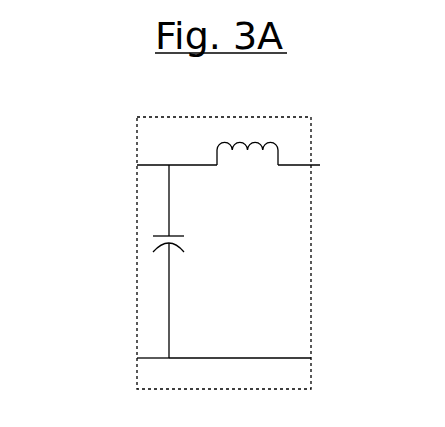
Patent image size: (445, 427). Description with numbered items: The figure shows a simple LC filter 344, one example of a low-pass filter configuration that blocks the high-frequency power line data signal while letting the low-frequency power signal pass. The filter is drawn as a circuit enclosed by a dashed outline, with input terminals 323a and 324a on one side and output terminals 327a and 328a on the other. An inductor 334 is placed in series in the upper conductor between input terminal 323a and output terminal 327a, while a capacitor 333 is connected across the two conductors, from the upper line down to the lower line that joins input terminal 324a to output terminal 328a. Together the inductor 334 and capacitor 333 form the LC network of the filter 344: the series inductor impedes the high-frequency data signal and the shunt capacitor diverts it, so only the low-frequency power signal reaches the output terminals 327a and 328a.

The LC filter 344 is at (217, 110).
The inductor 334 is at (248, 166).
The capacitor 333 is at (185, 246).
The output terminal 327a is at (122, 172).
The input terminal 323a is at (333, 165).
The output terminal 328a is at (120, 350).
The input terminal 324a is at (325, 357).